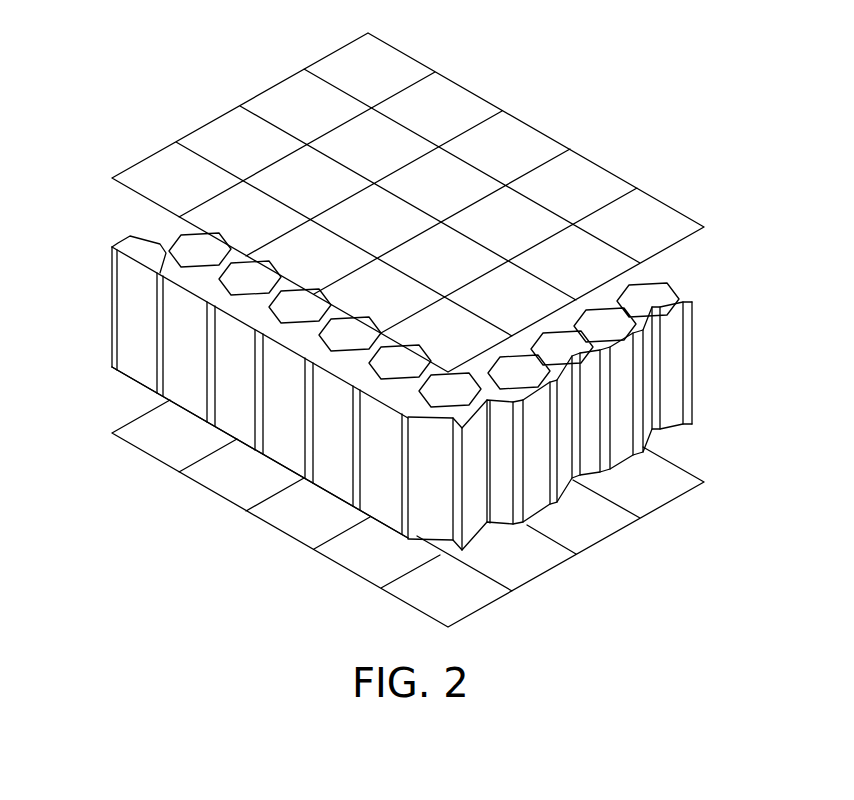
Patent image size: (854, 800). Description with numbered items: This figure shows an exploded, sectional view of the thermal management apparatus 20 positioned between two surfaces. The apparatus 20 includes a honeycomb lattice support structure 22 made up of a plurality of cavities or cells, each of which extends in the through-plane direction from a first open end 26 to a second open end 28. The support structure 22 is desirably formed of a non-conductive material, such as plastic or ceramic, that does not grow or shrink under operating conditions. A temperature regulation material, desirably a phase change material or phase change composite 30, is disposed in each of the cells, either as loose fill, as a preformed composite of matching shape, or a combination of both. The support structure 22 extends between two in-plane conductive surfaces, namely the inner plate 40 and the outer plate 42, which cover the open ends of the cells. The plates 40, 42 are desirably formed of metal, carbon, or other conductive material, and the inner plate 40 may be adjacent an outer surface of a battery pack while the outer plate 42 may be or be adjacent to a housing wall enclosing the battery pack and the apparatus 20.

The thermal management apparatus 20 is at (228, 80).
The honeycomb lattice support structure 22 is at (690, 396).
The first open end 26 is at (208, 422).
The second open end 28 is at (118, 240).
The phase change material or phase change composite 30 is at (187, 365).
The inner plate 40 is at (618, 535).
The outer plate 42 is at (600, 165).